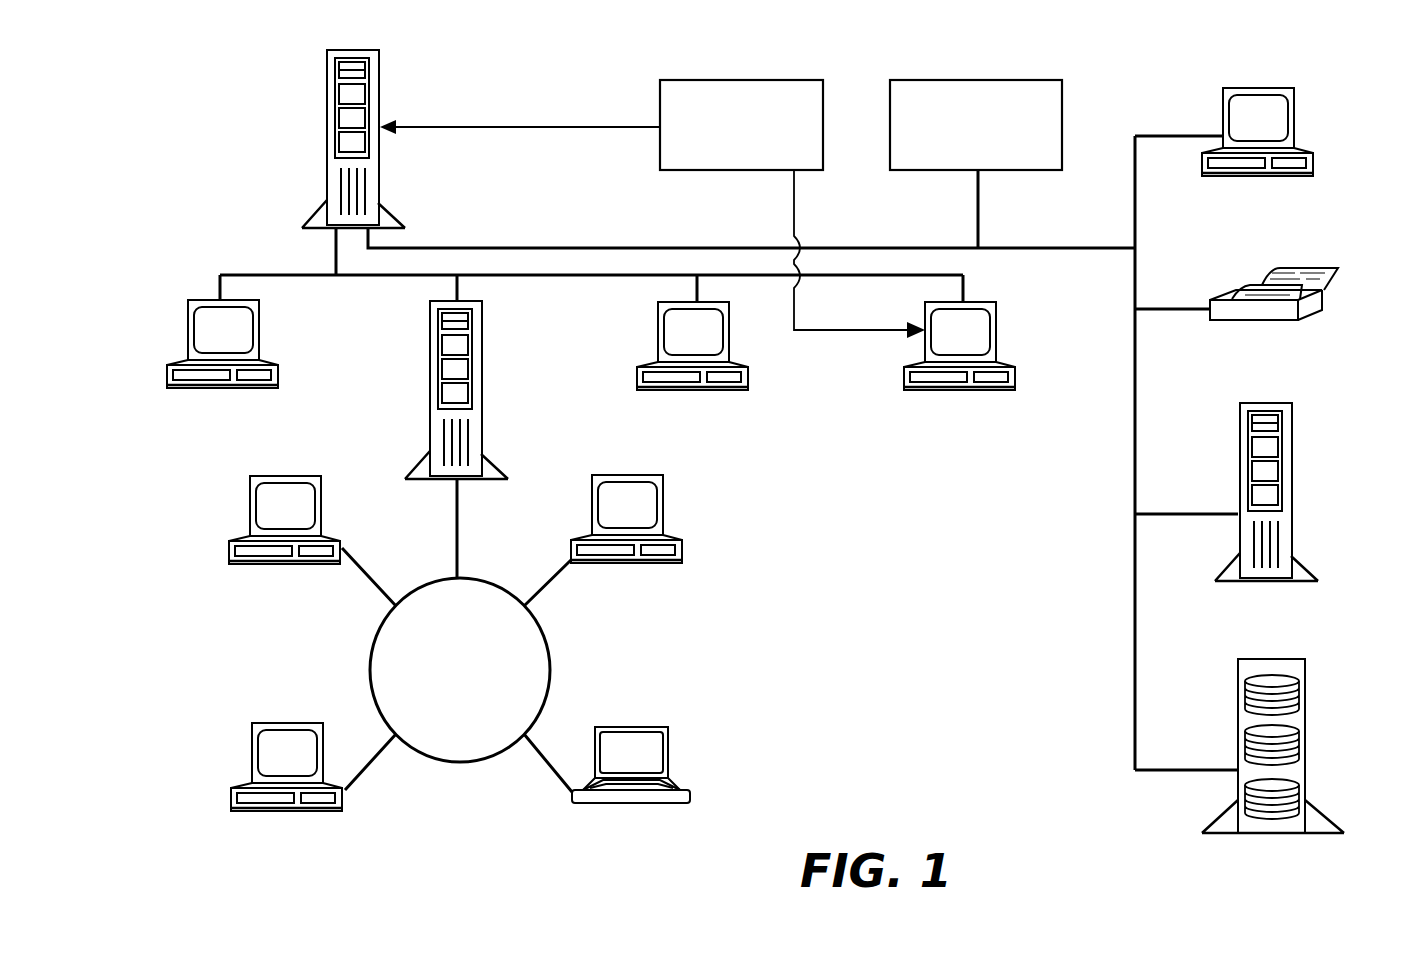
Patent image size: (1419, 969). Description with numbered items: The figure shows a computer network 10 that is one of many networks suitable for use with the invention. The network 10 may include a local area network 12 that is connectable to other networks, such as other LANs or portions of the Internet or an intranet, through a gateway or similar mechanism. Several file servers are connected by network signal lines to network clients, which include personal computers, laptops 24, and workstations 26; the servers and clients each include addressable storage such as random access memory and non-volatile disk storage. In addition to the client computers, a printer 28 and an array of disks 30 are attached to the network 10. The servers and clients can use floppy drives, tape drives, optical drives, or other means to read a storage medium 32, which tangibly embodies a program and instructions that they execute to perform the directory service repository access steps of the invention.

The computer network 10 is at (240, 140).
The local area network 12 is at (300, 276).
The laptop 24 is at (672, 745).
The workstation 26 is at (1294, 483).
The printer 28 is at (1325, 299).
The array of disks 30 is at (1305, 720).
The storage medium 32 is at (735, 80).